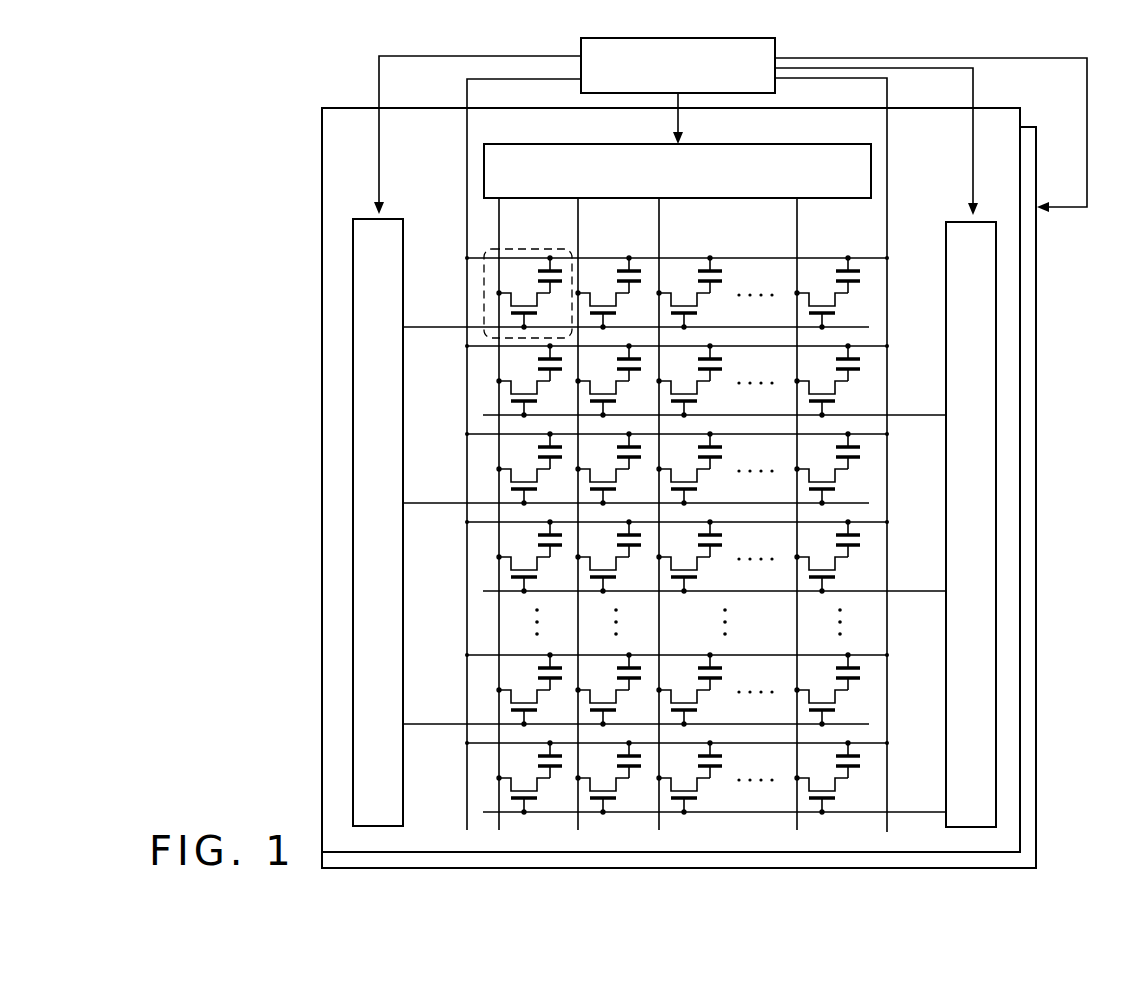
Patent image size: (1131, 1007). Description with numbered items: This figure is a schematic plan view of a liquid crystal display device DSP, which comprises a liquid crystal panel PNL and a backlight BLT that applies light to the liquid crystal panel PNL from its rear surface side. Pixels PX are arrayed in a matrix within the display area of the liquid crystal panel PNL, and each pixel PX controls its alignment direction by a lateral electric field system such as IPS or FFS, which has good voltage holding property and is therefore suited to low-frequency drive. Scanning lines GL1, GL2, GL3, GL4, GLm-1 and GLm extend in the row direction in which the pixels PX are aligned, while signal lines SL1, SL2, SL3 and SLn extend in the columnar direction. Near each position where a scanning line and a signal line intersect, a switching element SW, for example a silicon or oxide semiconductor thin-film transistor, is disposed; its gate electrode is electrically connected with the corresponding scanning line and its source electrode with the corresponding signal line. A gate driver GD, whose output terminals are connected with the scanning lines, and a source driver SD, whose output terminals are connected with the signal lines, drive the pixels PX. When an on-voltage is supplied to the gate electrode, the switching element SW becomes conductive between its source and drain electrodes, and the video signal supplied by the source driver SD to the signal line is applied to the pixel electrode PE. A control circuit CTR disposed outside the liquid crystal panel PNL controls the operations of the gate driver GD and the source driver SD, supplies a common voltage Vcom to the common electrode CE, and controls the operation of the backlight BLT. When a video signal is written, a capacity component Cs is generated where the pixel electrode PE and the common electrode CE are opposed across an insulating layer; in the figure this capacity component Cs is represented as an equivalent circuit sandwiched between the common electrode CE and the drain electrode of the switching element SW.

The liquid crystal display device DSP is at (684, 453).
The liquid crystal panel PNL is at (1020, 413).
The backlight BLT is at (1036, 322).
The control circuit CTR is at (730, 126).
The source driver SD is at (677, 171).
The gate driver GD is at (674, 523).
The common voltage Vcom is at (831, 168).
The common electrode CE is at (558, 267).
The signal line SL1 is at (521, 514).
The signal line SL2 is at (600, 514).
The signal line SL3 is at (681, 514).
The signal line SLn is at (820, 514).
The scanning line GL1 is at (636, 315).
The scanning line GL2 is at (714, 402).
The scanning line GL3 is at (636, 490).
The scanning line GL4 is at (714, 578).
The scanning line GLm-1 is at (636, 711).
The scanning line GLm is at (714, 799).
The pixel PX is at (484, 251).
The switching element SW is at (511, 307).
The capacity component Cs is at (534, 274).
The pixel electrode PE is at (559, 288).